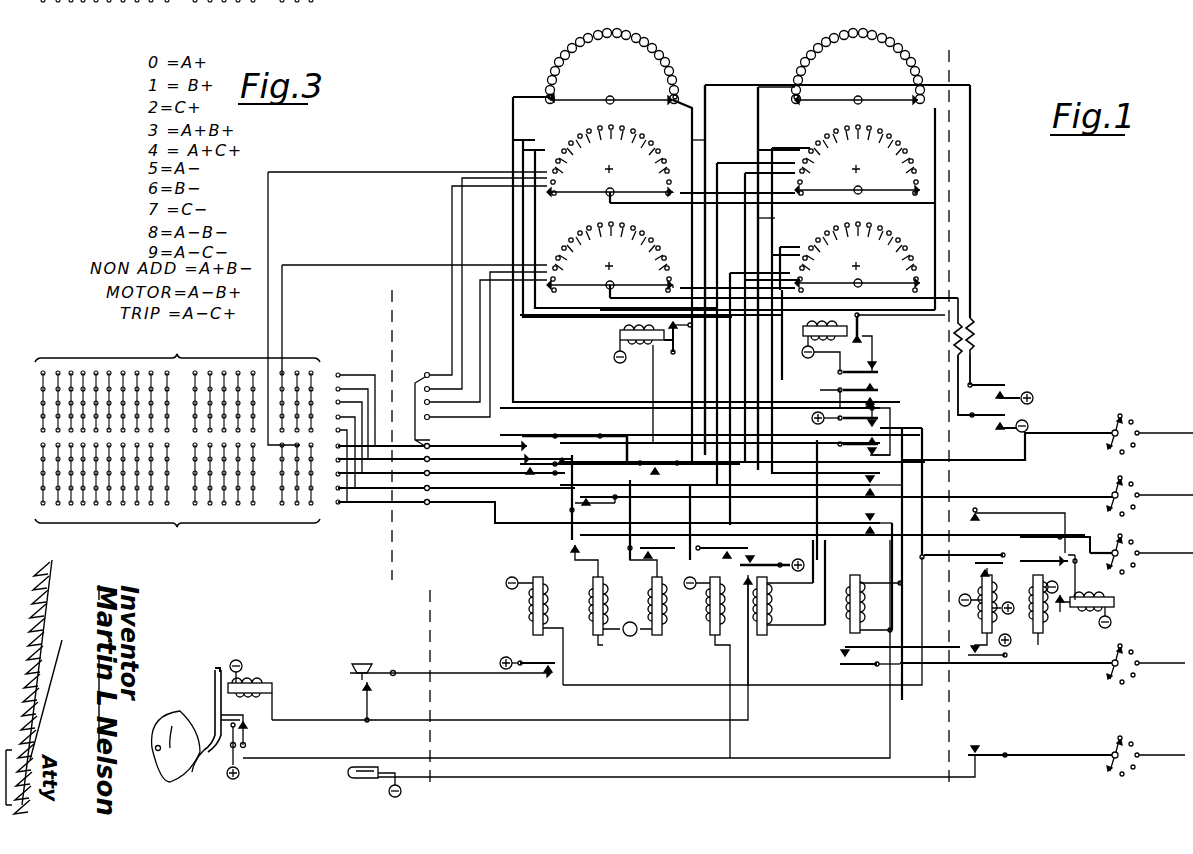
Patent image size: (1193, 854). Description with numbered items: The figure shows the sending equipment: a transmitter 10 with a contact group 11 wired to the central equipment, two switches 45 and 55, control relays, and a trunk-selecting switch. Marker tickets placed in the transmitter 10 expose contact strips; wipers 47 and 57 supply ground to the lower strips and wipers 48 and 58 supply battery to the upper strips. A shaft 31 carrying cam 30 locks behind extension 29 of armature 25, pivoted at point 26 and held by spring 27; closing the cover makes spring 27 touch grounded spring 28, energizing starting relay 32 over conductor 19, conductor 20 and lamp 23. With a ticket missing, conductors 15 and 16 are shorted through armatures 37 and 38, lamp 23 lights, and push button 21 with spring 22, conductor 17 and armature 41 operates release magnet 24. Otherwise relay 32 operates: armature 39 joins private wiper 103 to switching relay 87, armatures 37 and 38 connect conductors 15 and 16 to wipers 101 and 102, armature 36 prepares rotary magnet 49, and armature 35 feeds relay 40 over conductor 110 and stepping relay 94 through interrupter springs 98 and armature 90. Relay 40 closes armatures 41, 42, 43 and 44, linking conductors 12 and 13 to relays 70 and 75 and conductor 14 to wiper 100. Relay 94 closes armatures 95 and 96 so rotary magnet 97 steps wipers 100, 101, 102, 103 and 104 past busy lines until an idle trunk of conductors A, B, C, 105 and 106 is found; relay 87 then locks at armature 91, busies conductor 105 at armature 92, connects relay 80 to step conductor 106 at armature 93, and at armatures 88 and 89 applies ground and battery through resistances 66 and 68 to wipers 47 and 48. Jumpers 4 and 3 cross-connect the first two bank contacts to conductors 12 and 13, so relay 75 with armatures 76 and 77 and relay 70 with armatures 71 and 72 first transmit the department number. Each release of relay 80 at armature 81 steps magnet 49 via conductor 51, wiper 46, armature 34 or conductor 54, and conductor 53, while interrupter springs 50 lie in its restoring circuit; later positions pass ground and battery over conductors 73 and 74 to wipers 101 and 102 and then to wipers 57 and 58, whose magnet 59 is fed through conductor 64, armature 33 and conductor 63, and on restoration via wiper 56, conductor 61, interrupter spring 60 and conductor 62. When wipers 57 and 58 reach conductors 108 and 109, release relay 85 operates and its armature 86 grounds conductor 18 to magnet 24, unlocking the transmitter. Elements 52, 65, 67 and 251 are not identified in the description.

In FIG. 3, the transmitter 10 is at (177, 274).
In FIG. 3, the group of contacts 11 is at (340, 374).
In FIG. 3, the cross-connection 3 is at (425, 428).
In FIG. 3, the jumper wire 4 is at (421, 374).
In FIG. 3, the conductor 12 is at (406, 446).
In FIG. 3, the conductor 13 is at (406, 460).
In FIG. 3, the conductor 14 is at (406, 474).
In FIG. 3, the conductor 15 is at (406, 488).
In FIG. 3, the conductor 16 is at (406, 502).
In FIG. 3, the conductor 17 is at (462, 668).
In FIG. 3, the conductor 18 is at (464, 716).
In FIG. 3, the conductor 19 is at (464, 755).
In FIG. 3, the conductor 20 is at (464, 791).
In FIG. 3, the push button 21 is at (380, 673).
In FIG. 3, the spring 22 is at (369, 695).
In FIG. 3, the lamp 23 is at (355, 782).
In FIG. 3, the release magnet 24 is at (275, 692).
In FIG. 3, the armature 25 is at (213, 694).
In FIG. 3, the pivot point 26 is at (214, 670).
In FIG. 3, the spring 27 is at (250, 722).
In FIG. 3, the spring 28 is at (228, 744).
In FIG. 3, the extension 29 is at (192, 772).
In FIG. 3, the cam 30 is at (170, 730).
In FIG. 3, the shaft 31 is at (156, 750).
In FIG. 3, the starting relay 32 is at (871, 572).
In FIG. 3, the armature 33 is at (858, 363).
In FIG. 3, the armature 34 is at (878, 392).
In FIG. 3, the armature 35 is at (866, 422).
In FIG. 3, the armature 36 is at (866, 448).
In FIG. 3, the armature 37 is at (857, 478).
In FIG. 3, the armature 38 is at (857, 518).
In FIG. 3, the armature 39 is at (848, 662).
In FIG. 3, the relay 40 is at (556, 566).
In FIG. 3, the armature 41 is at (532, 658).
In FIG. 3, the armature 42 is at (535, 437).
In FIG. 3, the armature 43 is at (566, 455).
In FIG. 3, the armature 44 is at (532, 478).
In FIG. 3, the switch 45 is at (599, 66).
In FIG. 3, the wiper 46 is at (586, 98).
In FIG. 3, the wiper 47 is at (585, 194).
In FIG. 3, the wiper 48 is at (610, 273).
In FIG. 3, the rotary magnet 49 is at (610, 333).
In FIG. 3, the interrupter springs 50 is at (668, 352).
In FIG. 3, the conductor 51 is at (698, 145).
In FIG. 3, the battery 52 is at (816, 430).
In FIG. 3, the conductor 53 is at (653, 385).
In FIG. 3, the conductor 54 is at (705, 82).
In FIG. 3, the switch 55 is at (846, 66).
In FIG. 3, the wiper 56 is at (836, 100).
In FIG. 3, the wiper 57 is at (880, 178).
In FIG. 3, the wiper 58 is at (850, 266).
In FIG. 3, the rotary magnet 59 is at (846, 325).
In FIG. 3, the interrupter spring 60 is at (862, 325).
In FIG. 3, the conductor 61 is at (935, 225).
In FIG. 3, the conductor 62 is at (875, 358).
In FIG. 3, the conductor 63 is at (821, 354).
In FIG. 3, the conductor 64 is at (745, 122).
In FIG. 3, the conductor 65 is at (650, 204).
In FIG. 1, the resistance 66 is at (977, 342).
In FIG. 3, the wiper arm 67 is at (608, 288).
In FIG. 1, the resistance 68 is at (954, 340).
In FIG. 3, the relay 70 is at (609, 647).
In FIG. 3, the armature 71 is at (614, 500).
In FIG. 3, the armature 72 is at (589, 590).
In FIG. 3, the conductor 73 is at (588, 320).
In FIG. 3, the conductor 74 is at (553, 320).
In FIG. 3, the relay 75 is at (658, 640).
In FIG. 3, the armature 76 is at (652, 460).
In FIG. 3, the armature 77 is at (660, 552).
In FIG. 3, the relay 80 is at (707, 667).
In FIG. 3, the armature 81 is at (720, 552).
In FIG. 3, the release relay 85 is at (771, 620).
In FIG. 3, the armature 86 is at (772, 556).
In FIG. 1, the switching relay 87 is at (988, 604).
In FIG. 1, the armature 88 is at (988, 382).
In FIG. 1, the armature 89 is at (988, 418).
In FIG. 1, the armature 90 is at (984, 512).
In FIG. 1, the armature 91 is at (982, 554).
In FIG. 1, the armature 92 is at (986, 660).
In FIG. 1, the armature 93 is at (983, 756).
In FIG. 1, the stepping relay 94 is at (1036, 636).
In FIG. 1, the armature 95 is at (1049, 536).
In FIG. 1, the armature 96 is at (1048, 572).
In FIG. 1, the rotary magnet 97 is at (1112, 603).
In FIG. 1, the interrupter springs 98 is at (1064, 614).
In FIG. 1, the wiper 100 is at (1117, 423).
In FIG. 1, the wiper 101 is at (1110, 487).
In FIG. 1, the wiper 102 is at (1116, 538).
In FIG. 1, the private wiper 103 is at (1110, 672).
In FIG. 1, the step wiper 104 is at (1110, 746).
In FIG. 1, the conductor 105 is at (1180, 667).
In FIG. 1, the step conductor 106 is at (1180, 759).
In FIG. 3, the conductor 108 is at (781, 219).
In FIG. 3, the conductor 109 is at (796, 317).
In FIG. 3, the conductor 110 is at (796, 683).
In FIG. 3, the horn 251 is at (361, 662).